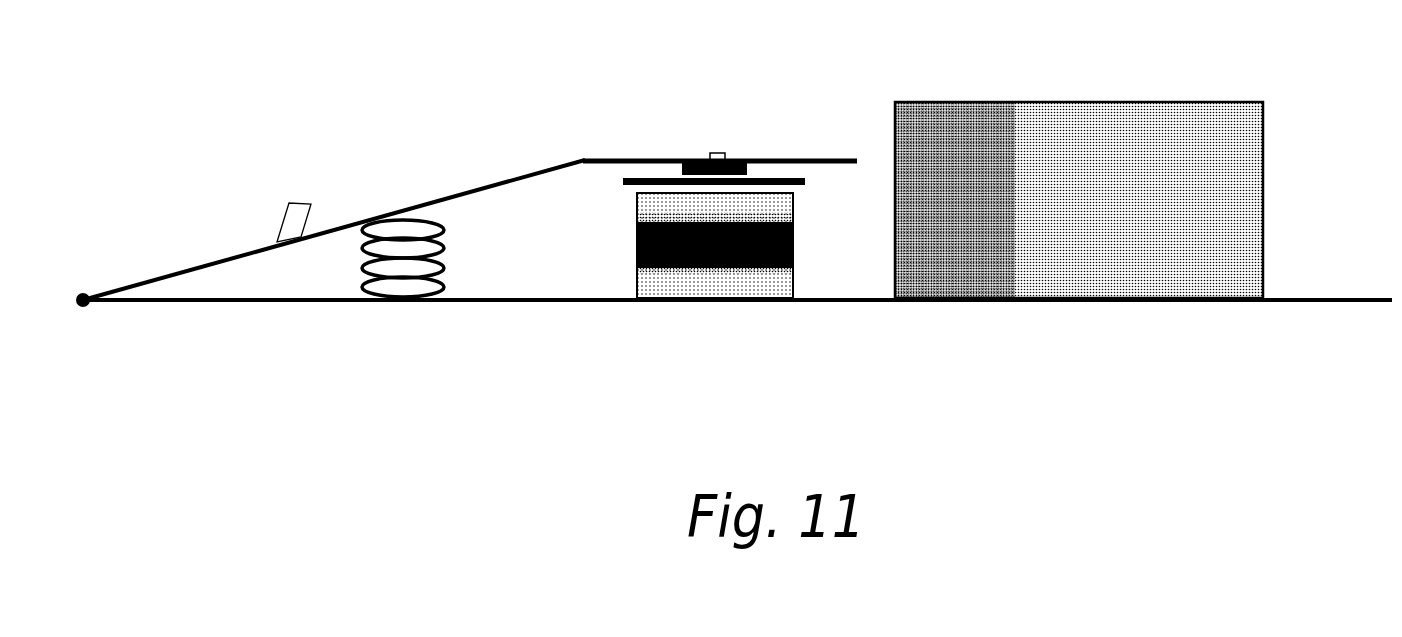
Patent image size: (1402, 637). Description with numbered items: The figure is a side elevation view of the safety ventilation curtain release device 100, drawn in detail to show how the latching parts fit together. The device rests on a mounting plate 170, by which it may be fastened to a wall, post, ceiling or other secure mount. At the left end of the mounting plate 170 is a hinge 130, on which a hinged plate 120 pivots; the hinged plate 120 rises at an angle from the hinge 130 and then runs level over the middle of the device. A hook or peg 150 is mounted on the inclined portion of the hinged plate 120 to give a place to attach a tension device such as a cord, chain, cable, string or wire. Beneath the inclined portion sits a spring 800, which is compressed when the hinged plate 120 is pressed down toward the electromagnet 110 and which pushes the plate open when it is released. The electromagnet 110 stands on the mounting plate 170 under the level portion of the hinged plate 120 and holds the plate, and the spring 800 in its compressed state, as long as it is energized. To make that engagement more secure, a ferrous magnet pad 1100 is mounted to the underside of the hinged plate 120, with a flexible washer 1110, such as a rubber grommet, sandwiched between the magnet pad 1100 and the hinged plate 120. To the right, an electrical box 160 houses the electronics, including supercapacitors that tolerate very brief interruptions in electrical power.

The safety ventilation curtain release device 100 is at (1113, 337).
The electromagnet 110 is at (730, 272).
The hinged plate 120 is at (492, 182).
The hinge 130 is at (80, 290).
The hook or peg 150 is at (297, 210).
The electrical box 160 is at (1008, 122).
The mounting plate 170 is at (1308, 302).
The spring 800 is at (417, 288).
The magnet pad 1100 is at (627, 187).
The flexible washer 1110 is at (748, 170).